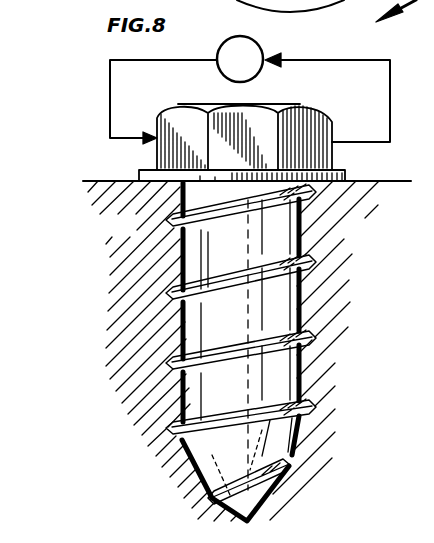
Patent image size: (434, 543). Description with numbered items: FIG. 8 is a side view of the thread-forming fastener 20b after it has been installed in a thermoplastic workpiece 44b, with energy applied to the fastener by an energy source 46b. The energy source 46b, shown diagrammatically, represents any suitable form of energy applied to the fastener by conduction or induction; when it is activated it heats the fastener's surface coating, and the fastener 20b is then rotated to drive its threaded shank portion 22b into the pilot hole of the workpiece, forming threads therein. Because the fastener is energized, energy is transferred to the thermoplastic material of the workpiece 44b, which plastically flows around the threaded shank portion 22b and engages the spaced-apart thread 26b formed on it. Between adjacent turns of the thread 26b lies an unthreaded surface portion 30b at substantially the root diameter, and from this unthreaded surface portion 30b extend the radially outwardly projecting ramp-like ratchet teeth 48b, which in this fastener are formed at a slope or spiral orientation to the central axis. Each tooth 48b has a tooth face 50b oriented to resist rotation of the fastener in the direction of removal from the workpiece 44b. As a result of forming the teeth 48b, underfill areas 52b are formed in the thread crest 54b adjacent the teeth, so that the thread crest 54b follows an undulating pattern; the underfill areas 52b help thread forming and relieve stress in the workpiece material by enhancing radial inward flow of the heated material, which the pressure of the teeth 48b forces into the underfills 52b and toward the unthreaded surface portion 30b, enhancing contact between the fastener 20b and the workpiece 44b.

The fastener 20b is at (76, 101).
The threaded shank portion 22b is at (118, 349).
The thermoplastic workpiece 44b is at (135, 181).
The energy source 46b is at (258, 42).
The ramp-like ratchet teeth 48b is at (300, 236).
The tooth face 50b is at (185, 248).
The unthreaded surface portion 30b is at (318, 263).
The thread crest 54b is at (304, 306).
The thread 26b is at (315, 340).
The underfill areas 52b is at (315, 366).